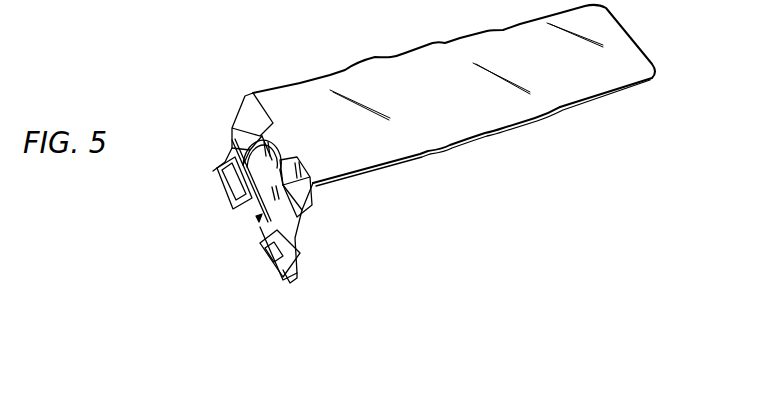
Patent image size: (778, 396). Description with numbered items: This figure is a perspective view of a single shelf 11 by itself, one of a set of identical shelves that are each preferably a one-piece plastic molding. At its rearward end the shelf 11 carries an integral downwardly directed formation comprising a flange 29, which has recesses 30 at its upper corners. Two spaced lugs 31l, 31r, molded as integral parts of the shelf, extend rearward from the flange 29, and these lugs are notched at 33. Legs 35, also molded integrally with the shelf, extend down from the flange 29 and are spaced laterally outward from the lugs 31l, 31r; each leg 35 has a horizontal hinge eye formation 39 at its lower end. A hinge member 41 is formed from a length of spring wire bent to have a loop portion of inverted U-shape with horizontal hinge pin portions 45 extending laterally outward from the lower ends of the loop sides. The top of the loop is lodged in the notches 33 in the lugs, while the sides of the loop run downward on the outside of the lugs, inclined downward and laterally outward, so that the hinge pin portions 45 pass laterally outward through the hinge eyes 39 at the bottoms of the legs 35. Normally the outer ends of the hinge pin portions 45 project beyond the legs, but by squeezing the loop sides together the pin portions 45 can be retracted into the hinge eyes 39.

The shelf 11 is at (630, 33).
The flange 29 is at (313, 220).
The recesses 30 is at (257, 118).
The lug 31r is at (230, 173).
The lug 31l is at (250, 214).
The notch 33 is at (268, 170).
The leg 35 is at (225, 162).
The hinge eye formation 39 is at (230, 202).
The hinge member 41 is at (258, 224).
The hinge pin portion 45 is at (213, 171).